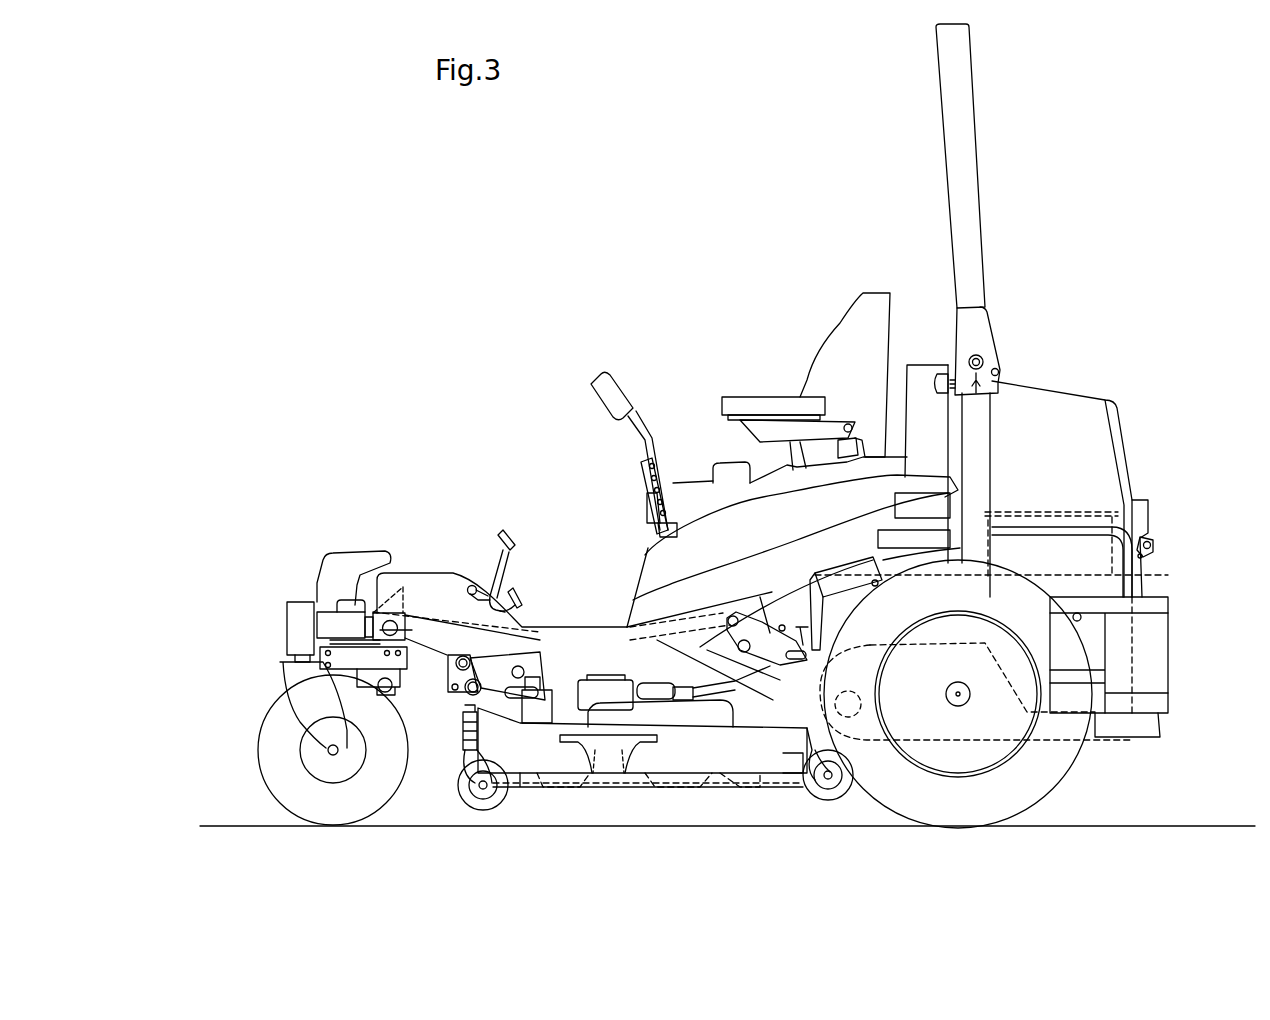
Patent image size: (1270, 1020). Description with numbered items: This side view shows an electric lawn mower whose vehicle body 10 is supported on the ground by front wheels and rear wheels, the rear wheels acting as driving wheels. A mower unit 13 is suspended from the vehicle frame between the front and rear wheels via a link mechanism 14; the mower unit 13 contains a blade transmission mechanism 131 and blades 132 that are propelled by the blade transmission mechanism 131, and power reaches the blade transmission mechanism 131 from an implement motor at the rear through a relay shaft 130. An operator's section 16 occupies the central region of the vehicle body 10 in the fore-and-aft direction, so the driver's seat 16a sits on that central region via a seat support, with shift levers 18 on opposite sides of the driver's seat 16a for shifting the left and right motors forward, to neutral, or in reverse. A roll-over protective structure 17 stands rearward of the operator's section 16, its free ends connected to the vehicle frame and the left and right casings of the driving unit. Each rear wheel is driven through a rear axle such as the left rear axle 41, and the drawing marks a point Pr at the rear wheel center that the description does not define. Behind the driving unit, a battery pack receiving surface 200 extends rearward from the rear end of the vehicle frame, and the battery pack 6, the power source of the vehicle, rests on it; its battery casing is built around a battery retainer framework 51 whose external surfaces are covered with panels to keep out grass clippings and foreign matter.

The roll-over protective structure (ROPS) 17 is at (955, 160).
The operator's section 16 is at (596, 333).
The driver's seat 16a is at (845, 352).
The shift levers 18 is at (605, 393).
The battery pack 6 is at (1050, 492).
The battery retainer framework 51 is at (1097, 526).
The battery pack receiving surface 200 is at (1155, 724).
The left rear axle 41 is at (955, 700).
The rear wheel center point Pr is at (959, 705).
The vehicle body 10 is at (430, 568).
The link mechanism 14 is at (437, 694).
The mower unit 13 is at (742, 793).
The blades 132 is at (585, 780).
The blade transmission mechanism 131 is at (597, 667).
The relay shaft 130 is at (712, 690).